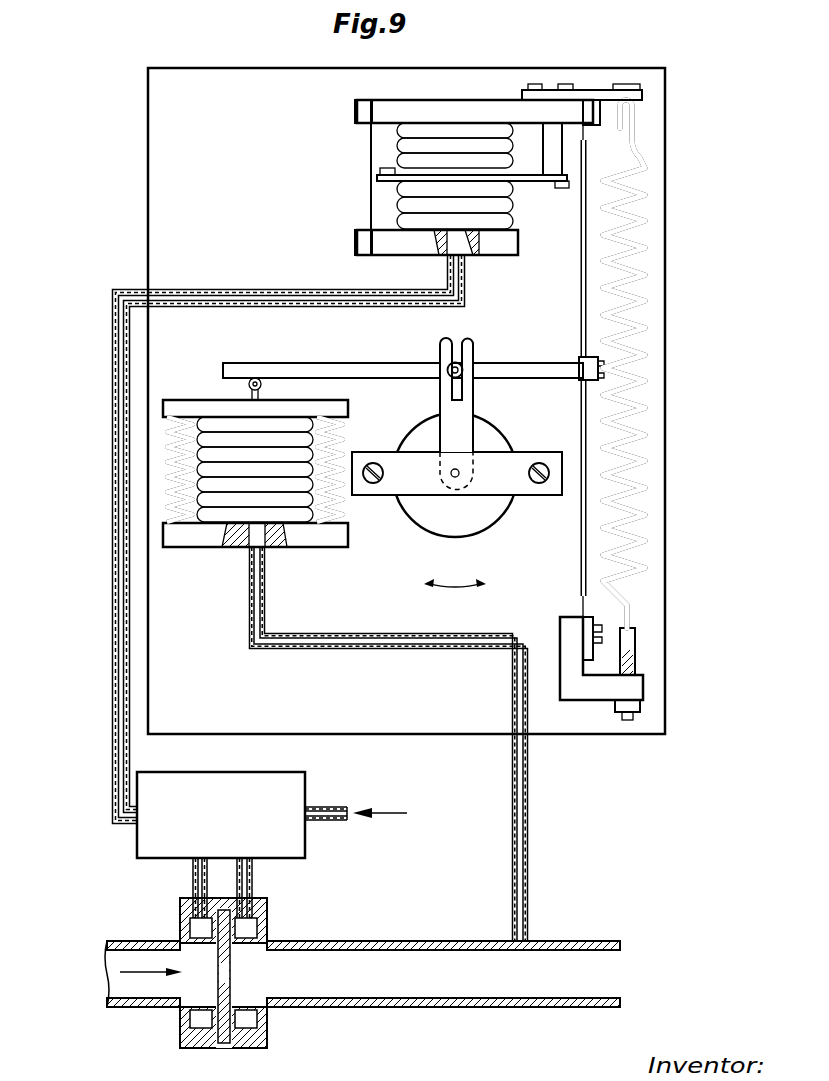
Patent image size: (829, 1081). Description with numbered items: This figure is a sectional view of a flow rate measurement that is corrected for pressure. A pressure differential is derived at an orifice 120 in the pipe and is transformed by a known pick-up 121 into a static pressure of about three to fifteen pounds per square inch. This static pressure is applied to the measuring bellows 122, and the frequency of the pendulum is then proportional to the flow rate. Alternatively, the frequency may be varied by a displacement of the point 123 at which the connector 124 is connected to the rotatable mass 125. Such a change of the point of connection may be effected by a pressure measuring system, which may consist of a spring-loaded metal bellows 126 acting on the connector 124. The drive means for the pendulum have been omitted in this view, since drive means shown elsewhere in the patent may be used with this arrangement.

The orifice 120 is at (233, 940).
The pick-up 121 is at (290, 792).
The measuring bellows 122 is at (400, 212).
The point 123 is at (463, 368).
The connector 124 is at (330, 363).
The rotatable mass 125 is at (493, 432).
The spring-loaded metal bellows 126 is at (213, 428).